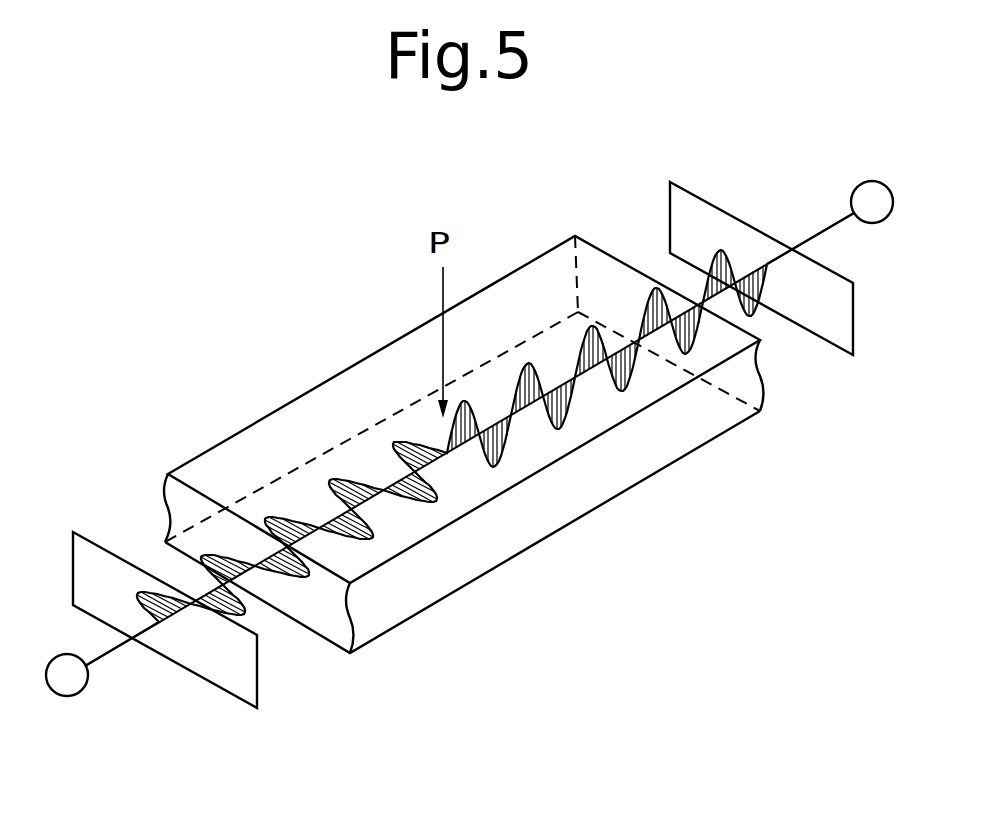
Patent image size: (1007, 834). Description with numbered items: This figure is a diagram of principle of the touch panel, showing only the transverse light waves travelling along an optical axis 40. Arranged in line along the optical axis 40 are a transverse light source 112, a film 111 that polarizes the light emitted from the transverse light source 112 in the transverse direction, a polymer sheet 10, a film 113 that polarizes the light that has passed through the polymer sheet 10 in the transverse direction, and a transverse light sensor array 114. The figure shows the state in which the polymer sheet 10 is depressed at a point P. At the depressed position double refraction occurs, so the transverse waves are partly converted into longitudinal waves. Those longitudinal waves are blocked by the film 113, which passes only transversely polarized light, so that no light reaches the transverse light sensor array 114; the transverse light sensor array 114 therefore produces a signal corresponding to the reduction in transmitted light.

The polymer sheet 10 is at (330, 393).
The optical axis 40 is at (108, 652).
The film for polarizing light 111 is at (227, 678).
The transverse light source 112 is at (67, 696).
The film for polarizing light 113 is at (832, 335).
The transverse light sensor array 114 is at (872, 188).